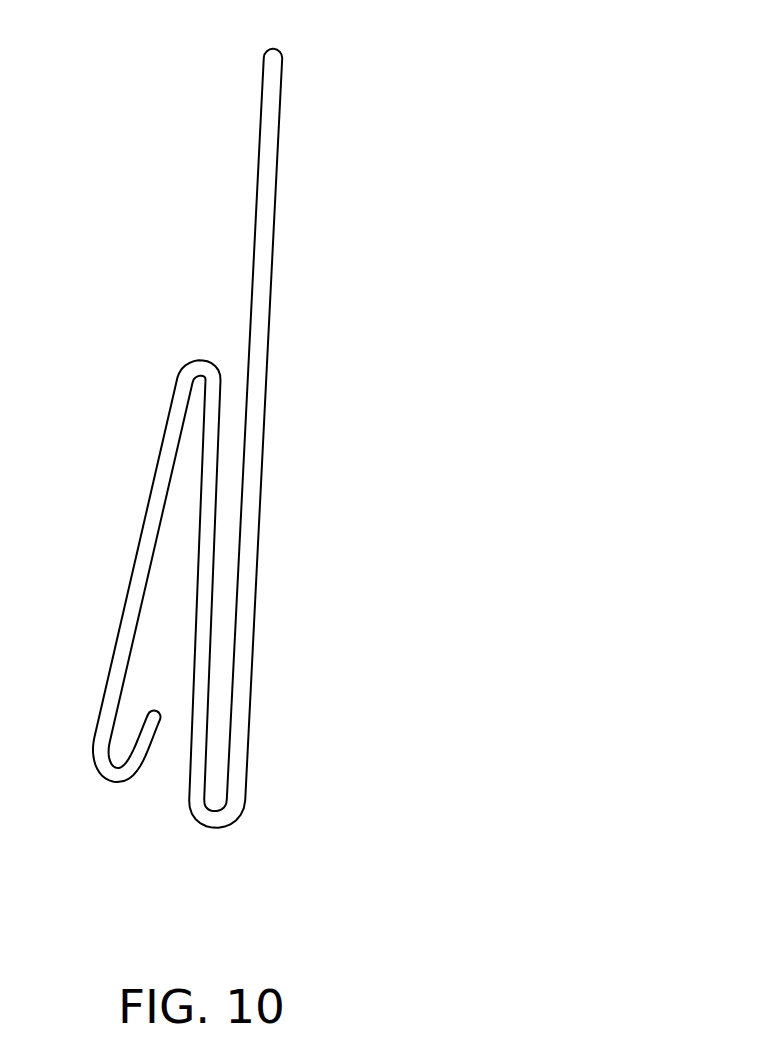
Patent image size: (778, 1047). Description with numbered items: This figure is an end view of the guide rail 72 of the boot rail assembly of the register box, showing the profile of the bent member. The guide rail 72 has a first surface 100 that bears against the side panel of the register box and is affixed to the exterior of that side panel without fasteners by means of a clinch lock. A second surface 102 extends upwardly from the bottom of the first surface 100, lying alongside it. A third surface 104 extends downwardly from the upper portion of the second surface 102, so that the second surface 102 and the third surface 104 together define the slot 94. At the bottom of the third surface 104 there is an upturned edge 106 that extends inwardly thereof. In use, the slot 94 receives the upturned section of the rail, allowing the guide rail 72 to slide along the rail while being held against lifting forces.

The guide rail 72 is at (360, 260).
The slot 94 is at (175, 532).
The first surface 100 is at (278, 138).
The second surface 102 is at (213, 568).
The third surface 104 is at (132, 585).
The upturned edge 106 is at (142, 767).